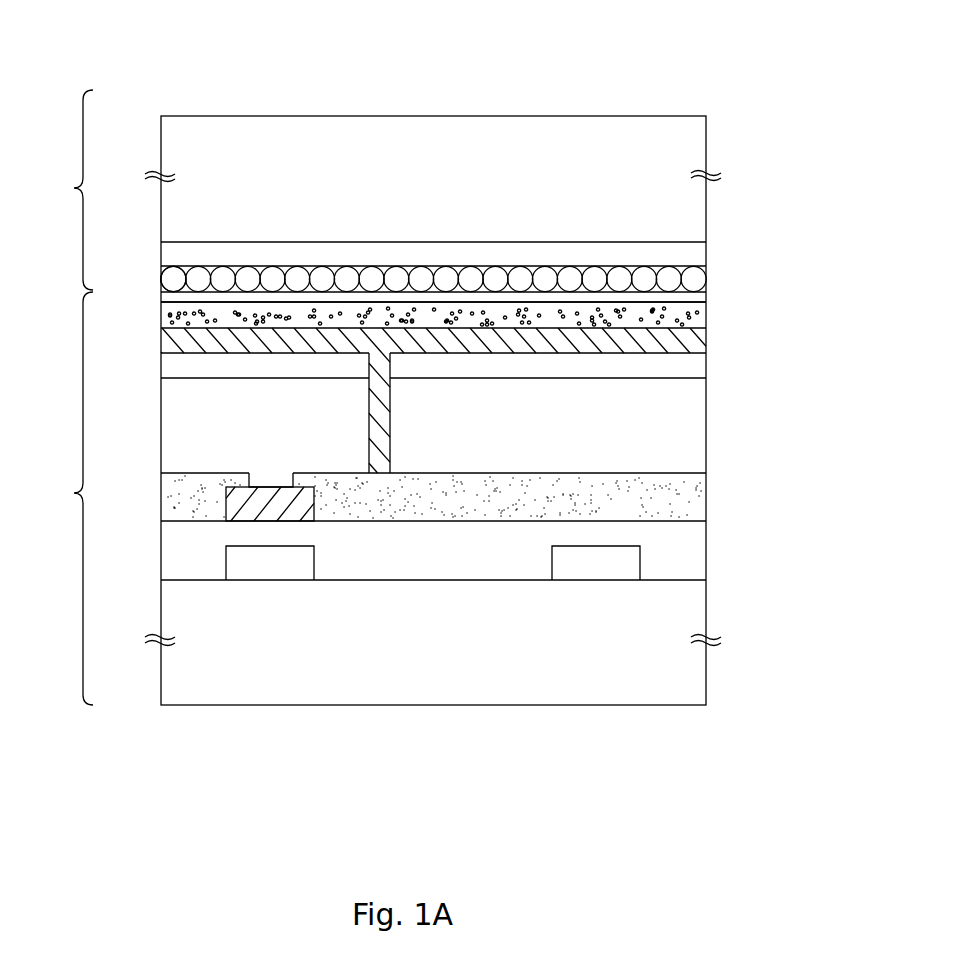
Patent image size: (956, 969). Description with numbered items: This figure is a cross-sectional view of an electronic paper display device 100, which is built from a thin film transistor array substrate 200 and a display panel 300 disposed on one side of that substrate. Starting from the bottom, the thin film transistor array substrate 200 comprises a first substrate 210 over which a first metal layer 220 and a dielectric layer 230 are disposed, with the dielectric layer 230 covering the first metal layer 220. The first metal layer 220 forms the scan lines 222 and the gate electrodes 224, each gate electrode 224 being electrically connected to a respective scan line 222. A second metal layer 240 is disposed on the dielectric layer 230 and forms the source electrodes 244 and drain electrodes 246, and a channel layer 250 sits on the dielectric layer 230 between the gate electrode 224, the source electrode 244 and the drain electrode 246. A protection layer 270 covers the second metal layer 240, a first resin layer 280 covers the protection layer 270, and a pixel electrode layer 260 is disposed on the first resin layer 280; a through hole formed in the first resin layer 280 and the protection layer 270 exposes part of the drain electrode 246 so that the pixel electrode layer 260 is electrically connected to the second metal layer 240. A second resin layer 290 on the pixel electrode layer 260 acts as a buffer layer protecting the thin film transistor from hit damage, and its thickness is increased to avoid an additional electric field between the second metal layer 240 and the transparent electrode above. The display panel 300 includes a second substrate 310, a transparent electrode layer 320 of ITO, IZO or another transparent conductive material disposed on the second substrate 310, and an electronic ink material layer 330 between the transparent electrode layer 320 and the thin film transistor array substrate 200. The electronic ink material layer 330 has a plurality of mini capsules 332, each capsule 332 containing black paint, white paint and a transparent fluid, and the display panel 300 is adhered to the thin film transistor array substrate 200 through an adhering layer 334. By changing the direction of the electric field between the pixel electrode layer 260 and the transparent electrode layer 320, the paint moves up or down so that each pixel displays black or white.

The electronic paper display device 100 is at (115, 31).
The display panel 300 is at (61, 190).
The thin film transistor array substrate 200 is at (61, 498).
The second substrate 310 is at (698, 208).
The transparent electrode layer 320 is at (698, 254).
The electronic ink material layer 330 is at (698, 288).
The capsule 332 is at (166, 280).
The adhering layer 334 is at (166, 304).
The second resin layer 290 is at (698, 314).
The pixel electrode layer 260 is at (698, 342).
The first resin layer 280 is at (698, 369).
The protection layer 270 is at (698, 428).
The second metal layer 240 is at (503, 437).
The source electrode 244 is at (197, 492).
The drain electrode 246 is at (698, 498).
The channel layer 250 is at (240, 507).
The dielectric layer 230 is at (698, 555).
The first substrate 210 is at (698, 609).
The first metal layer 220 is at (433, 688).
The gate electrode 224 is at (272, 565).
The scan line 222 is at (594, 565).